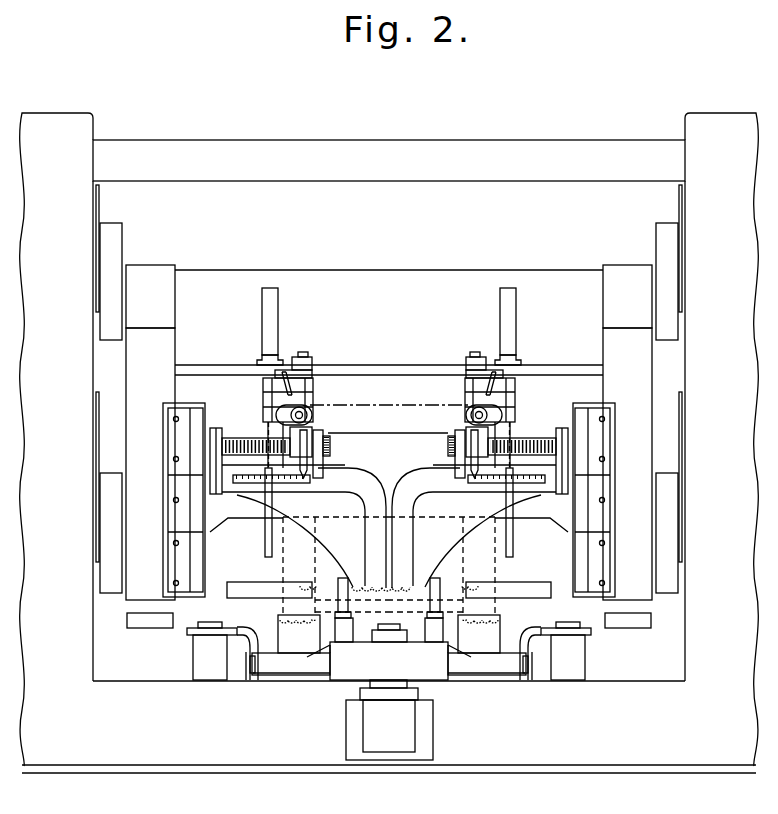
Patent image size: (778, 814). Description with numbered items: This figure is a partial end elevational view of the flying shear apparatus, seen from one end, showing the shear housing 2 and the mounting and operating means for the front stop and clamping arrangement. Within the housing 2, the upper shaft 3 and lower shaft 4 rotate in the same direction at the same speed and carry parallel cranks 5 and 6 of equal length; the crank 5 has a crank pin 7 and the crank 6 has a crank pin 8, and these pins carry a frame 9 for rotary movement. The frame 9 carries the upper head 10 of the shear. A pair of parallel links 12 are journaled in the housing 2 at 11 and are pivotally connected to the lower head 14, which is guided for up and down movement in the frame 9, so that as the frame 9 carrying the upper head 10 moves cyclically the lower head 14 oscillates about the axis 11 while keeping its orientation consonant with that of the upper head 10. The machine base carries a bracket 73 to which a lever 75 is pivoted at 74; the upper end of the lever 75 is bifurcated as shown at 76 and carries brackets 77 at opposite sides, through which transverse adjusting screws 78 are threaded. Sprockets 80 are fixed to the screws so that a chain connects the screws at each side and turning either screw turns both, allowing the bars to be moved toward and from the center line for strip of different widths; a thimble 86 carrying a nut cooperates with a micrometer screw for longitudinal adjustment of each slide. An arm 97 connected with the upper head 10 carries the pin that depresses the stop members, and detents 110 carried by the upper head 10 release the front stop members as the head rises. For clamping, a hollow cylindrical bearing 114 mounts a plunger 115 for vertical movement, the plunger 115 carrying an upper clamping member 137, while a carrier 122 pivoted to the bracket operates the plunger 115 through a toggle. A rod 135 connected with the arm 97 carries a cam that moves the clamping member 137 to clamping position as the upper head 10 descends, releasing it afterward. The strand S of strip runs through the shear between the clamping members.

The shear housing 2 is at (98, 120).
The upper shaft 3 is at (96, 246).
The lower shaft 4 is at (96, 500).
The crank 5 is at (118, 252).
The crank 6 is at (110, 532).
The crank pin 7 is at (126, 305).
The crank pin 8 is at (126, 568).
The frame 9 is at (143, 360).
The upper head 10 is at (398, 307).
The journal axis 11 is at (277, 660).
The parallel links 12 is at (307, 561).
The lower head 14 is at (390, 420).
The bracket 73 is at (432, 634).
The pivot 74 is at (450, 553).
The lever 75 is at (375, 541).
The bifurcated upper end 76 is at (408, 481).
The brackets 77 is at (215, 482).
The transverse adjusting screws 78 is at (243, 418).
The sprockets 80 is at (333, 448).
The thimble 86 is at (313, 418).
The arm 97 is at (262, 300).
The detents 110 is at (255, 586).
The hollow cylindrical bearing 114 is at (297, 372).
The plunger 115 is at (307, 388).
The carrier 122 is at (466, 368).
The rod 135 is at (264, 546).
The upper clamping member 137 is at (470, 386).
The strand S is at (393, 393).